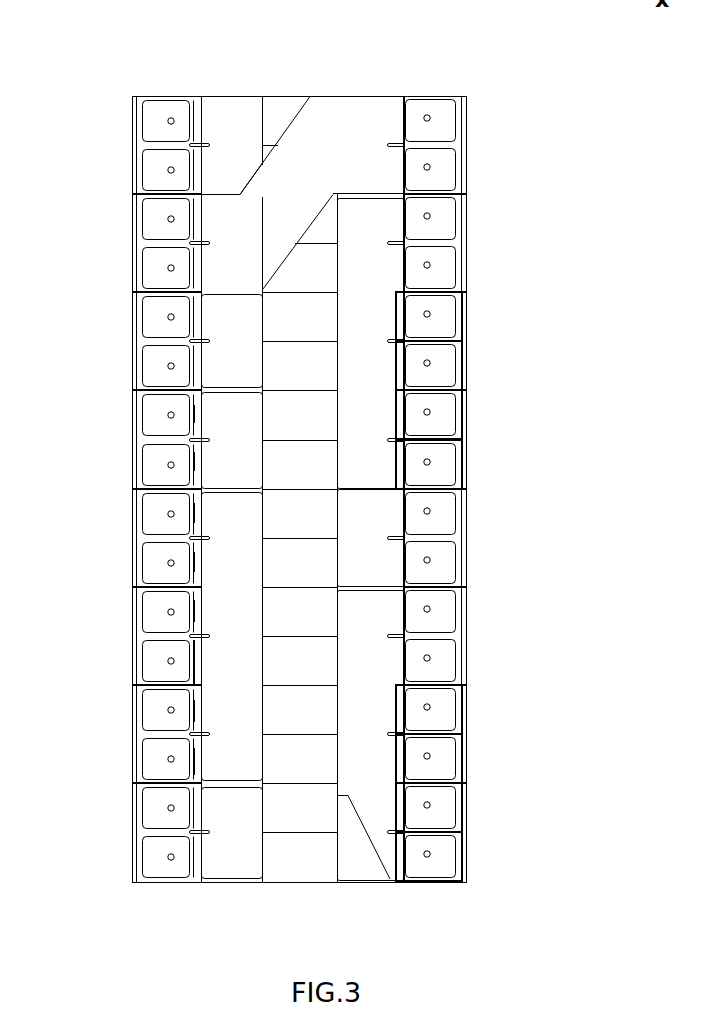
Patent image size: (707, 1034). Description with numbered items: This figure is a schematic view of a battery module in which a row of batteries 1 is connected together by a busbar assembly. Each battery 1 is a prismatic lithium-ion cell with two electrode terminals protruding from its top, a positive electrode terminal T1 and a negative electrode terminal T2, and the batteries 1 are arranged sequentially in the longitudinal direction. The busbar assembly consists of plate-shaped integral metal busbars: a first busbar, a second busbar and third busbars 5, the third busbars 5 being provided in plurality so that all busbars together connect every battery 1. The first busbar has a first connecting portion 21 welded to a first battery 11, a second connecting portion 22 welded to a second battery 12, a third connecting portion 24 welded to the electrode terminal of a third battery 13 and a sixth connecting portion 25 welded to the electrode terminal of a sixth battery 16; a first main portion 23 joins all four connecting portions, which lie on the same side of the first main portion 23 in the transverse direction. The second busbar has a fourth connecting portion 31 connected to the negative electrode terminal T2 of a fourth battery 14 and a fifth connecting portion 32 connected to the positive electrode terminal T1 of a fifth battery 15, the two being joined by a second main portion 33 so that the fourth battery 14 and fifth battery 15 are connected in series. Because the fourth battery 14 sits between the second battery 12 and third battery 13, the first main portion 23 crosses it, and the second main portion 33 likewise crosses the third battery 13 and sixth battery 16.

The battery 1 is at (131, 124).
The third busbar 5 is at (222, 117).
The first battery 11 is at (131, 762).
The second battery 12 is at (131, 712).
The third battery 13 is at (131, 566).
The fourth battery 14 is at (131, 614).
The fifth battery 15 is at (131, 418).
The sixth battery 16 is at (131, 516).
The first connecting portion 21 is at (190, 762).
The second connecting portion 22 is at (190, 717).
The first main portion 23 is at (252, 670).
The third connecting portion 24 is at (182, 565).
The sixth connecting portion 25 is at (182, 516).
The fourth connecting portion 31 is at (190, 612).
The fifth connecting portion 32 is at (192, 417).
The second main portion 33 is at (245, 473).
The positive electrode terminal T1 is at (458, 122).
The negative electrode terminal T2 is at (458, 318).